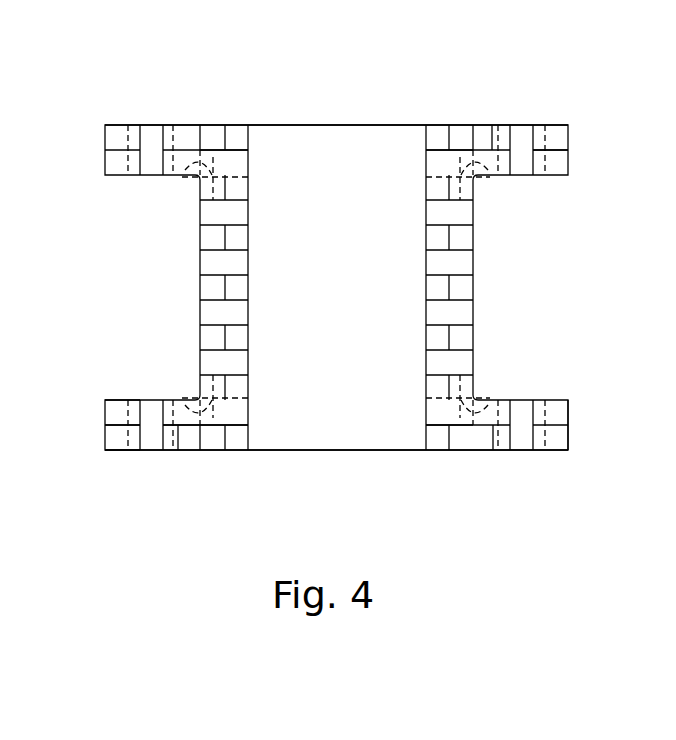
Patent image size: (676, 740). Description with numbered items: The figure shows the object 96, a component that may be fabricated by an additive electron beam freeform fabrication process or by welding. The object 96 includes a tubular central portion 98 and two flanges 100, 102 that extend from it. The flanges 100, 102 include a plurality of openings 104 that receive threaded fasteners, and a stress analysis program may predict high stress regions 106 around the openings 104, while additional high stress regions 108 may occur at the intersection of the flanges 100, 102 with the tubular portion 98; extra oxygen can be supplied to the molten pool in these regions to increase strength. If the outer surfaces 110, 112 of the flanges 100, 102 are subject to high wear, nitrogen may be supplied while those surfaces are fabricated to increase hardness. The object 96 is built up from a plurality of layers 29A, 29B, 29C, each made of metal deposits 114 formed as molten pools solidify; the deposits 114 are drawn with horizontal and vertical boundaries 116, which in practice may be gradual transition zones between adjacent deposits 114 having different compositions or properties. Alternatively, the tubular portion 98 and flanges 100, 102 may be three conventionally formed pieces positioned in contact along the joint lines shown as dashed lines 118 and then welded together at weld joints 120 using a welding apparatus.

The object 96 is at (572, 152).
The tubular central portion 98 is at (200, 281).
The flange 100 is at (558, 125).
The flange 102 is at (553, 453).
The openings 104 is at (153, 125).
The high stress regions 106 is at (133, 178).
The high stress regions 108 is at (197, 180).
The outer surface 110 is at (570, 163).
The outer surface 112 is at (562, 440).
The metal deposits 114 is at (177, 445).
The boundaries 116 is at (183, 430).
The joint lines 118 is at (236, 170).
The weld joints 120 is at (187, 182).
The layer 29A is at (103, 445).
The layer 29B is at (105, 430).
The layer 29C is at (105, 417).